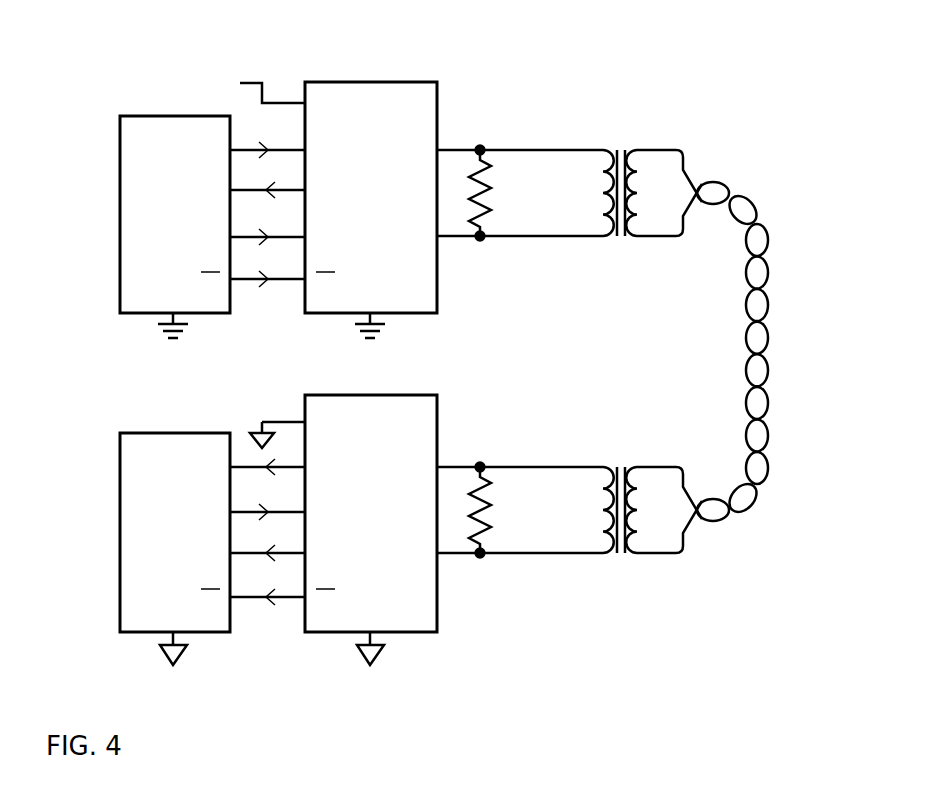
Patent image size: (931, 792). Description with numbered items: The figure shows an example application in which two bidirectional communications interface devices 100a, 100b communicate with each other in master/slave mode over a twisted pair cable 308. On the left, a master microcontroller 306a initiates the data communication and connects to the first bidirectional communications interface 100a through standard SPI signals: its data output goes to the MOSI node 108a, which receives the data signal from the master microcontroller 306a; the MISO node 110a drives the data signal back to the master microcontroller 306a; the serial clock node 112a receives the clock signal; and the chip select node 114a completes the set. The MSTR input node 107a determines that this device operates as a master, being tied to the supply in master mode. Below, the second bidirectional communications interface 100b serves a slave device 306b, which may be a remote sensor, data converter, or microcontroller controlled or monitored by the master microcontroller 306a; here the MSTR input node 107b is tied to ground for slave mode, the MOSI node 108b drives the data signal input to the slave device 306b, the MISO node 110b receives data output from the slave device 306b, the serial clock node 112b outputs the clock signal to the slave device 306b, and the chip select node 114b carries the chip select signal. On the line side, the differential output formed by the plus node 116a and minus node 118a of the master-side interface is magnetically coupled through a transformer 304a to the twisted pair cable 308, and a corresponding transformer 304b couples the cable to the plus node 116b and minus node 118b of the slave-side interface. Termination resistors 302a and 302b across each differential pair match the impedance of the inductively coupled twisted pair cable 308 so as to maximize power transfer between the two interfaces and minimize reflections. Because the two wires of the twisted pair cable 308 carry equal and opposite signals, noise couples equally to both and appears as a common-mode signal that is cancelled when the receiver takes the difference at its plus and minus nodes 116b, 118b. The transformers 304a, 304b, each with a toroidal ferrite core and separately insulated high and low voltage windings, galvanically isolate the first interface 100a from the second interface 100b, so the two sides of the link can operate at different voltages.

The first bidirectional communications interface 100a is at (392, 82).
The second bidirectional communications interface 100b is at (392, 395).
The MSTR input node 107a is at (300, 103).
The MSTR input node 107b is at (300, 418).
The MOSI node 108a is at (305, 142).
The MOSI node 108b is at (298, 463).
The MISO node 110a is at (305, 184).
The MISO node 110b is at (305, 507).
The serial clock node 112a is at (305, 229).
The serial clock node 112b is at (305, 547).
The chip select node 114a is at (305, 272).
The chip select node 114b is at (305, 590).
The plus node 116a is at (443, 147).
The plus node 116b is at (443, 464).
The minus node 118a is at (443, 240).
The minus node 118b is at (443, 557).
The termination resistor 302a is at (492, 180).
The termination resistor 302b is at (492, 490).
The transformer 304a is at (628, 145).
The transformer 304b is at (618, 462).
The master microcontroller 306a is at (120, 170).
The slave device 306b is at (120, 483).
The twisted pair cable 308 is at (768, 290).